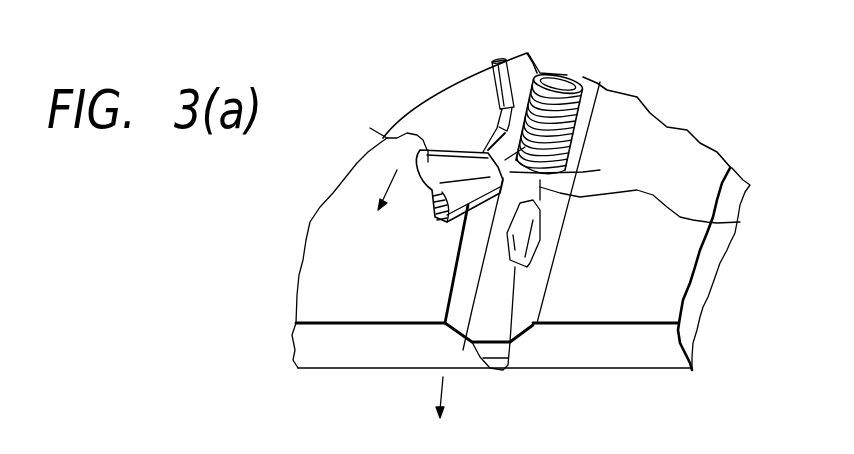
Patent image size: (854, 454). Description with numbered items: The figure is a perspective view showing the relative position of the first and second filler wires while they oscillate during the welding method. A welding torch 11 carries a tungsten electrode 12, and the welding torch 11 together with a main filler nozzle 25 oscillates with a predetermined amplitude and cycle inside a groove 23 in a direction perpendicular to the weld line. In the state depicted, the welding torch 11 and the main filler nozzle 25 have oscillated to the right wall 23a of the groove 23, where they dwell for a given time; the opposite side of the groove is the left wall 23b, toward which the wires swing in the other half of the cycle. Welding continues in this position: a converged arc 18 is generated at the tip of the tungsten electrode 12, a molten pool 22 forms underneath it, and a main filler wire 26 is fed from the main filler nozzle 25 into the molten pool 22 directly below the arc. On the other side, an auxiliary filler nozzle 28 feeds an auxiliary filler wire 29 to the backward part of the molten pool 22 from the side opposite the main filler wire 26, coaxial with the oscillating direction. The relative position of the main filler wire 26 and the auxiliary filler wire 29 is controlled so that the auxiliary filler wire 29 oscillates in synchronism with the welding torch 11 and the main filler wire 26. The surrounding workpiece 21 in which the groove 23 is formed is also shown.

The welding torch 11 is at (387, 138).
The tungsten electrode 12 is at (487, 150).
The converged arc 18 is at (563, 173).
The plate 21 is at (303, 258).
The molten pool 22 is at (560, 80).
The groove 23 is at (466, 274).
The right wall 23a is at (516, 321).
The left wall 23b is at (463, 350).
The main filler nozzle 25 is at (530, 243).
The main filler wire 26 is at (740, 222).
The auxiliary filler nozzle 28 is at (493, 83).
The auxiliary filler wire 29 is at (507, 130).